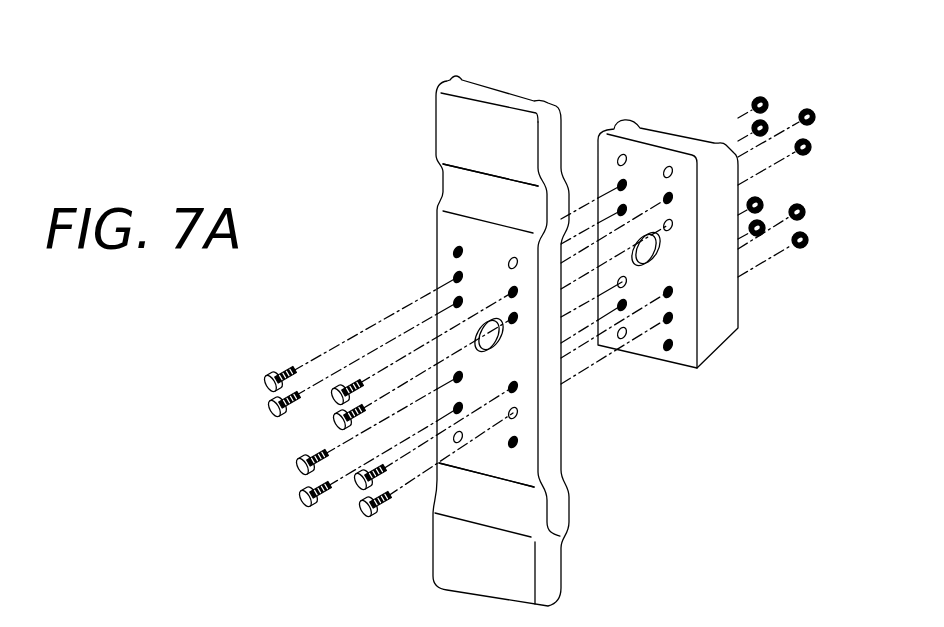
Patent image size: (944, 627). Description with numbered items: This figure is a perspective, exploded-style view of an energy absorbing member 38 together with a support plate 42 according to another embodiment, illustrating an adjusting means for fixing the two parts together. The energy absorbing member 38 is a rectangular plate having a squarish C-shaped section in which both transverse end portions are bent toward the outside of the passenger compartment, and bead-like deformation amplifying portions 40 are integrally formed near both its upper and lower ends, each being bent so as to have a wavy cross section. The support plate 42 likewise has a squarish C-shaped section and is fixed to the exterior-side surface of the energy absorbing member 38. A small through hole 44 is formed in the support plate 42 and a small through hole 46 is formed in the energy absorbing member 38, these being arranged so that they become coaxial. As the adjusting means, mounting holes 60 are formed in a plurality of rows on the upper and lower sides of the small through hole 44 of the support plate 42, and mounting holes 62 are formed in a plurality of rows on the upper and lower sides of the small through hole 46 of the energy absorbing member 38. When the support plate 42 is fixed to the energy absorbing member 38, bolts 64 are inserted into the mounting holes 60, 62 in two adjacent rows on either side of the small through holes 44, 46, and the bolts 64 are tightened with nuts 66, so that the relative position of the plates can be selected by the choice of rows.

The energy absorbing member 38 is at (494, 94).
The deformation amplifying portions 40 is at (470, 189).
The support plate 42 is at (639, 115).
The small through hole 44 is at (652, 250).
The small through hole 46 is at (499, 341).
The mounting holes 60 is at (672, 292).
The mounting holes 62 is at (456, 302).
The bolts 64 is at (338, 422).
The nuts 66 is at (806, 107).